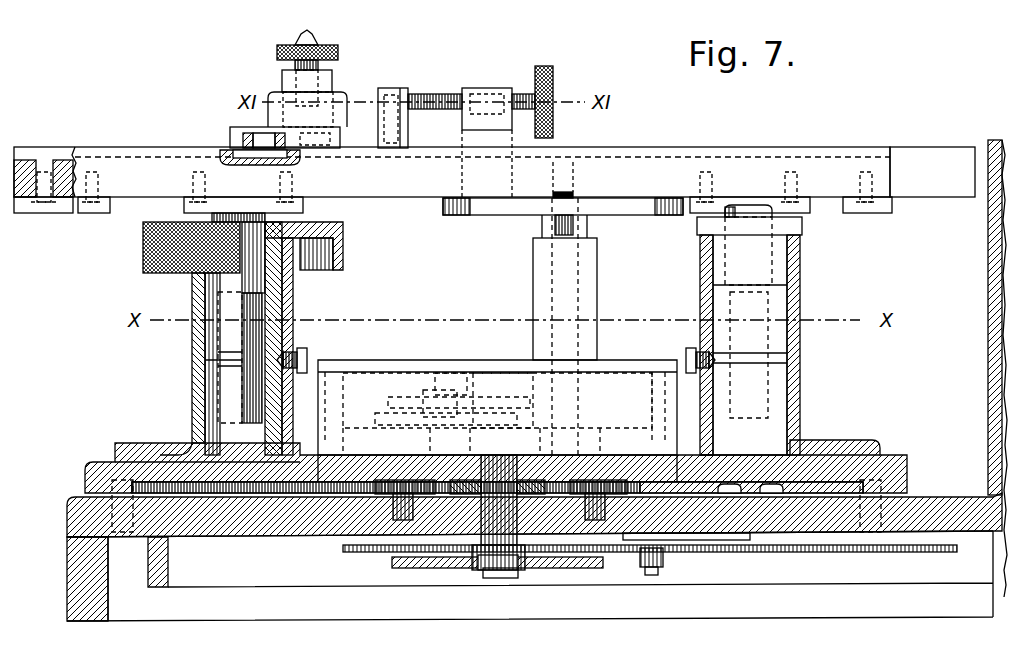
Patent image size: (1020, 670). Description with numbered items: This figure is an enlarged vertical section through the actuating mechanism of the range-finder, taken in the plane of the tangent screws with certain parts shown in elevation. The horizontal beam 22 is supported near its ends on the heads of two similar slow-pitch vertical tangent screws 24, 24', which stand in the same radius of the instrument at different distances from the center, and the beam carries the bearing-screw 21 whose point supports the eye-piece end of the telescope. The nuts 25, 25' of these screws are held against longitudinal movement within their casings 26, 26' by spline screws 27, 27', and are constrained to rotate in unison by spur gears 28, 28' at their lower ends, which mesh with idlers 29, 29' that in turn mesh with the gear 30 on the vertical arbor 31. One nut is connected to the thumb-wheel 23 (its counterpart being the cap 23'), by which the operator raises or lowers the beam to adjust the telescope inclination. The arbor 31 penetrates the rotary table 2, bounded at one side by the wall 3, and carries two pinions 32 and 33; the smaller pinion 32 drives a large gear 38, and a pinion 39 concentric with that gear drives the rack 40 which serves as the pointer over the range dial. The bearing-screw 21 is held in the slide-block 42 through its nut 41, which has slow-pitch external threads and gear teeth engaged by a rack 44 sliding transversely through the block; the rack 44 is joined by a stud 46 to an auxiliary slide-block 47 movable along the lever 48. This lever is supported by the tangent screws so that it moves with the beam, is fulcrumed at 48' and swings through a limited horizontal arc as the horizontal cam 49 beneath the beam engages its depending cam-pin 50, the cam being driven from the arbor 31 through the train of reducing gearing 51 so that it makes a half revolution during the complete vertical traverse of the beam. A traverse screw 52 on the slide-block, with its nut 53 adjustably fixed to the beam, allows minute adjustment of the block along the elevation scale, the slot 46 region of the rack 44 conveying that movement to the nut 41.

The rotary table 2 is at (68, 536).
The housing wall 3 is at (990, 310).
The screw 21 is at (316, 38).
The horizontal beam 22 is at (932, 149).
The thumb-wheel 23 is at (267, 247).
The clamp cap 23' is at (774, 227).
The vertical tangent screw 24 is at (309, 322).
The spindle stem 24' is at (811, 214).
The nut 25 is at (268, 364).
The nut 25' is at (795, 317).
The casing 26 is at (294, 334).
The casing 26' is at (781, 345).
The spline screw 27 is at (309, 354).
The set screw 27' is at (686, 349).
The spur gear 28 is at (461, 466).
The spur gear 28' is at (803, 474).
The idler 29 is at (405, 474).
The idler 29' is at (598, 473).
The gear 30 is at (522, 482).
The vertical arbor 31 is at (489, 472).
The pinion 32 is at (486, 568).
The pinion 33 is at (515, 568).
The large gear 38 is at (720, 553).
The pinion 39 is at (648, 562).
The rack 40 is at (752, 536).
The nut 41 is at (333, 79).
The slide-block 42 is at (348, 137).
The rack 44 is at (248, 138).
The stud 46 is at (268, 138).
The auxiliary slide-block 47 is at (290, 163).
The lever 48 is at (453, 154).
The fulcrum 48' is at (40, 149).
The horizontal cam 49 is at (608, 207).
The cam-pin 50 is at (560, 222).
The train of reducing gearing 51 is at (516, 378).
The traverse screw 52 is at (432, 94).
The nut 53 is at (486, 90).